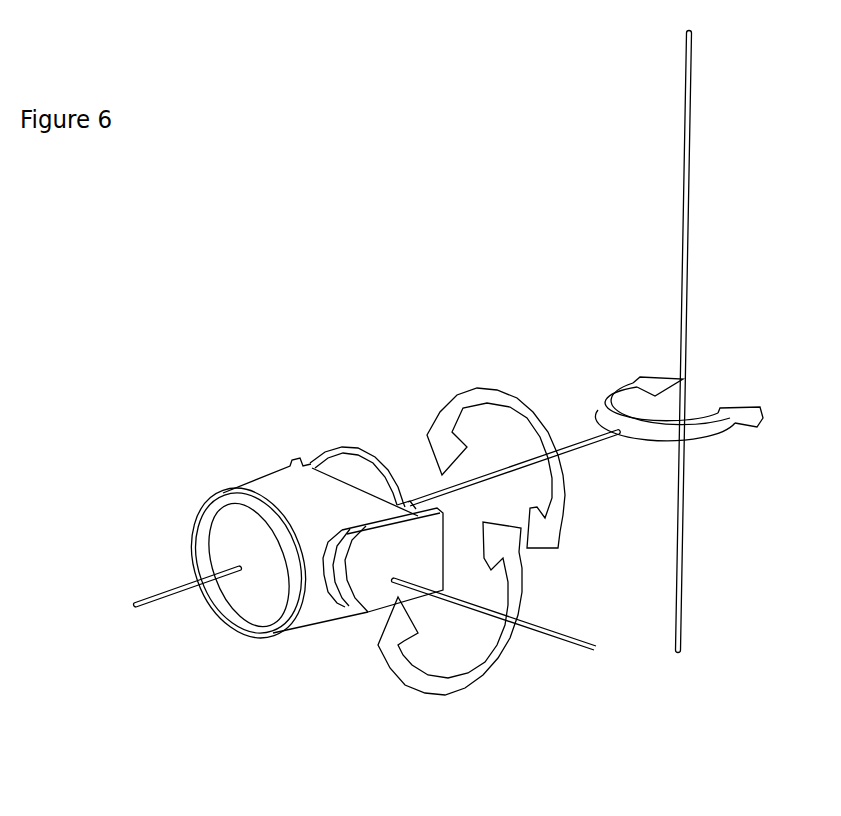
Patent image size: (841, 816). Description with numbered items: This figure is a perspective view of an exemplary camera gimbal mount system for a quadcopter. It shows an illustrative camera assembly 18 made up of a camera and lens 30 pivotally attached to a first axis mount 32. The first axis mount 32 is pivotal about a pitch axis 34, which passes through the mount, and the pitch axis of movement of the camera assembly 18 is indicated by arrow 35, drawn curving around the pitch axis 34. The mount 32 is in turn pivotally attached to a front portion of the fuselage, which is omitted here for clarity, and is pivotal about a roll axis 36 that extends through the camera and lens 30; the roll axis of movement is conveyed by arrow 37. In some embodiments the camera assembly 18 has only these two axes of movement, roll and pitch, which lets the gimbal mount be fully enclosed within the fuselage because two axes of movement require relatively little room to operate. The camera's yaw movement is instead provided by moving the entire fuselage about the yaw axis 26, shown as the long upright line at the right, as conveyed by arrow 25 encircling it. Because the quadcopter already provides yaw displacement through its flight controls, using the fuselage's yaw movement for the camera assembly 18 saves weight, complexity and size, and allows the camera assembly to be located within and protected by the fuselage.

The camera assembly 18 is at (215, 352).
The arrow 25 is at (612, 392).
The yaw axis 26 is at (688, 325).
The camera and lens 30 is at (277, 488).
The first axis mount 32 is at (428, 564).
The pitch axis 34 is at (550, 650).
The arrow 35 is at (473, 683).
The roll axis 36 is at (164, 603).
The arrow 37 is at (463, 398).